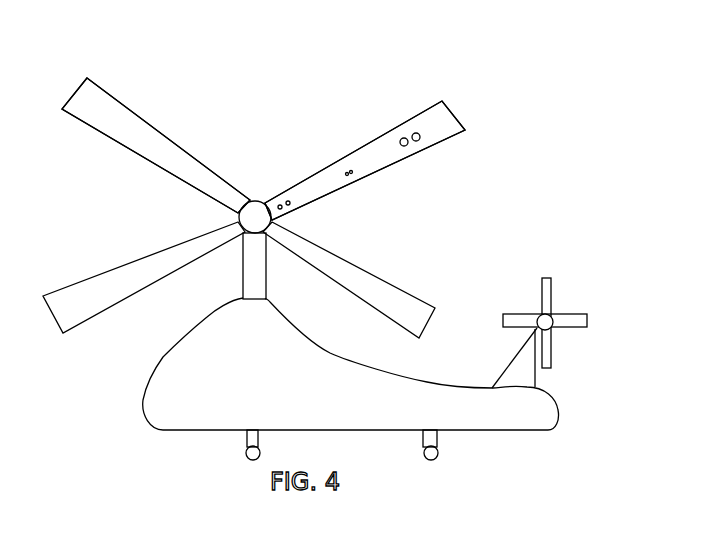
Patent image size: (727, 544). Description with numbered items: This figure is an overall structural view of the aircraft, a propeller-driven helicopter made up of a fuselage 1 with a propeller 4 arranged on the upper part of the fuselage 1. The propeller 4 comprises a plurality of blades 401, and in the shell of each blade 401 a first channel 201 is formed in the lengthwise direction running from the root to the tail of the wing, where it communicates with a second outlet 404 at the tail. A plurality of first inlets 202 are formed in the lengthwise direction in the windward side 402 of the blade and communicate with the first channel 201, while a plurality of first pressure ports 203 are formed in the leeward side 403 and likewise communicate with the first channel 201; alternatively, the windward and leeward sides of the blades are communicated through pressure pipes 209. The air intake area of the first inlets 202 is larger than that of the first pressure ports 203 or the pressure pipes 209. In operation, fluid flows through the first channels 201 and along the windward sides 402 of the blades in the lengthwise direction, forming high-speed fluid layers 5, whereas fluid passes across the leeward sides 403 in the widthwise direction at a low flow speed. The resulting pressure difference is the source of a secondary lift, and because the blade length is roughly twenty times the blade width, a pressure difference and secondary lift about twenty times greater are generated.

The fuselage 1 is at (120, 408).
The propeller 4 is at (130, 229).
The high-speed fluid layer 5 is at (220, 187).
The first channel 201 is at (320, 197).
The first inlet 202 is at (404, 138).
The first pressure port 203 is at (352, 171).
The pressure pipe 209 is at (297, 207).
The blade 401 is at (148, 143).
The windward side 402 is at (115, 110).
The leeward side 403 is at (128, 150).
The second outlet 404 is at (450, 113).